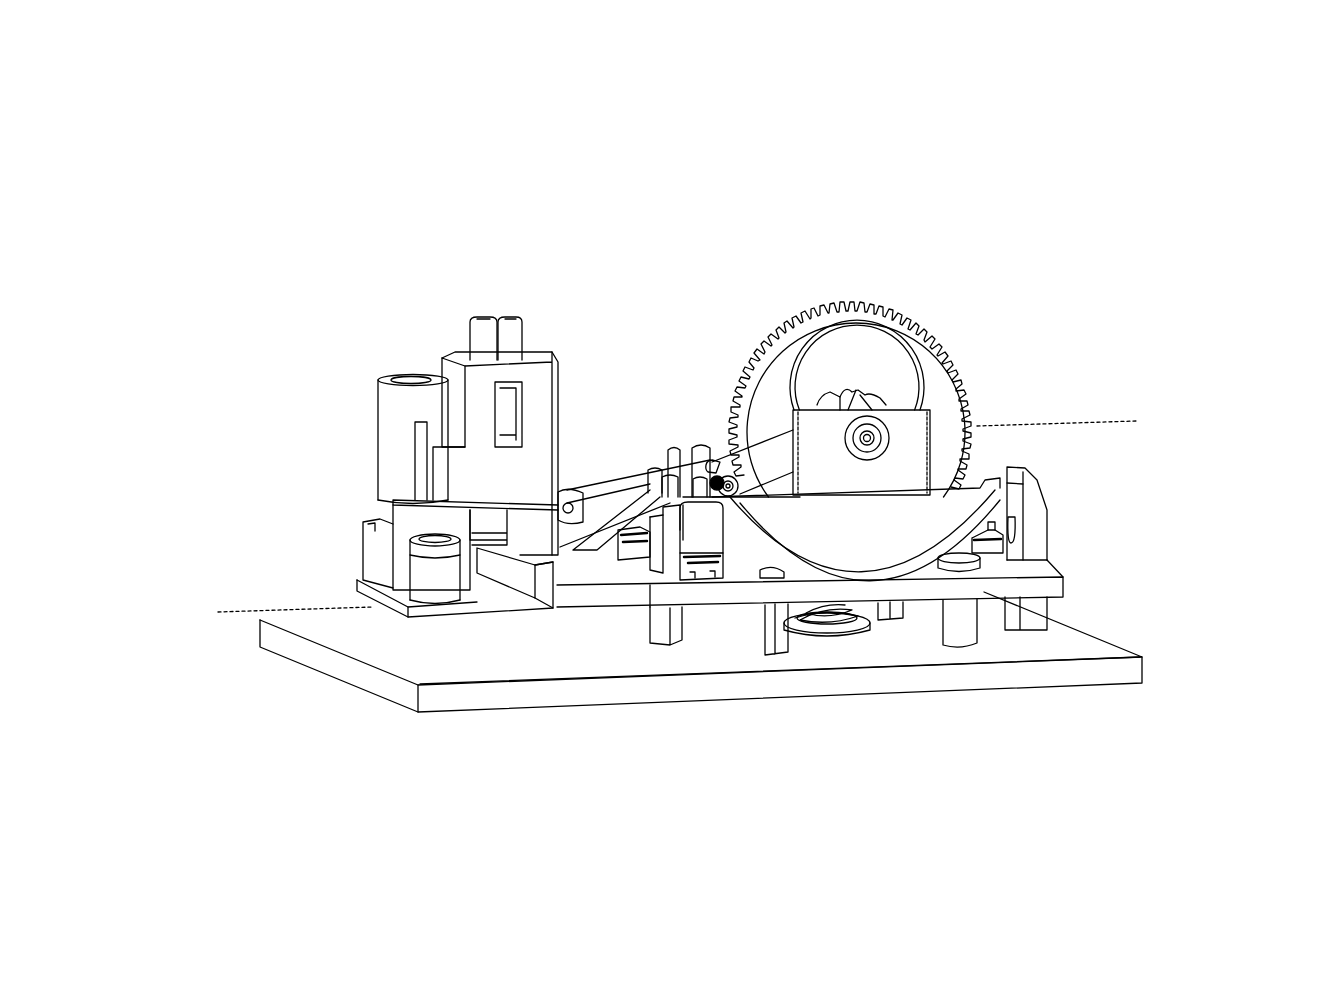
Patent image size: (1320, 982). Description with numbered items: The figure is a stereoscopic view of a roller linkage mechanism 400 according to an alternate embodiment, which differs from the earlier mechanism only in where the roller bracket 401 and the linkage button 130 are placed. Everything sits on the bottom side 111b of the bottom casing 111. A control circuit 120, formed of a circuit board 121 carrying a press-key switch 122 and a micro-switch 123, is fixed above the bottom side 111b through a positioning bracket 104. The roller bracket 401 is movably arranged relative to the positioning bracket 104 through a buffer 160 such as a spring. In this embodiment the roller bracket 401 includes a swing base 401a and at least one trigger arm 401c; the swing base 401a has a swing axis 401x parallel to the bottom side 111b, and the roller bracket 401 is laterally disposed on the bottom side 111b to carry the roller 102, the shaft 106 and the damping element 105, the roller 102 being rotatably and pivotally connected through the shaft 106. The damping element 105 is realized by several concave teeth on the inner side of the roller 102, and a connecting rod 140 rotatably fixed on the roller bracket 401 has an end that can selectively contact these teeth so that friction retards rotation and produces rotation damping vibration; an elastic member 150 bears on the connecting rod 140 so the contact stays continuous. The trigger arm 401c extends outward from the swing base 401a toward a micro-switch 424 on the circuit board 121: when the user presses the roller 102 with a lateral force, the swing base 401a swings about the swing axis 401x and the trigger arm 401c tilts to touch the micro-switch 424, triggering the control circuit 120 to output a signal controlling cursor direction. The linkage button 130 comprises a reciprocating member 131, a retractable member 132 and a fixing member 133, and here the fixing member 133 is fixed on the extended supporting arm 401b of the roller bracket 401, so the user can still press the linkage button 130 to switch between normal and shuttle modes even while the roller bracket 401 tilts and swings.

The roller linkage mechanism 400 is at (156, 82).
The roller 102 is at (860, 343).
The positioning bracket 104 is at (1037, 542).
The damping element 105 is at (803, 415).
The shaft 106 is at (890, 440).
The bottom casing 111 is at (716, 650).
The bottom side of the bottom casing 111b is at (1110, 648).
The control circuit 120 is at (1030, 748).
The circuit board 121 is at (925, 597).
The press-key switch 122 is at (887, 582).
The micro-switch 123 is at (990, 555).
The linkage button 130 is at (200, 430).
The reciprocating member 131 is at (440, 368).
The retractable member 132 is at (507, 432).
The fixing member 133 is at (383, 563).
The connecting rod 140 is at (610, 484).
The elastic member 150 is at (727, 555).
The buffer 160 is at (829, 627).
The roller bracket 401 is at (1251, 251).
The swing base 401a is at (968, 508).
The extended supporting arm 401b is at (497, 606).
The trigger arm 401c is at (675, 532).
The swing axis 401x is at (1085, 421).
The micro-switch 424 is at (703, 574).